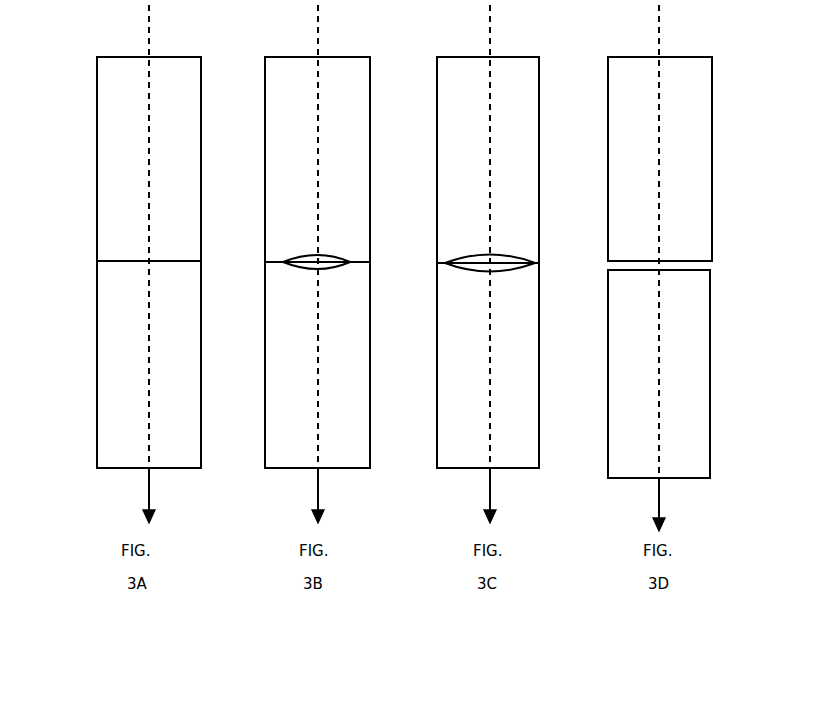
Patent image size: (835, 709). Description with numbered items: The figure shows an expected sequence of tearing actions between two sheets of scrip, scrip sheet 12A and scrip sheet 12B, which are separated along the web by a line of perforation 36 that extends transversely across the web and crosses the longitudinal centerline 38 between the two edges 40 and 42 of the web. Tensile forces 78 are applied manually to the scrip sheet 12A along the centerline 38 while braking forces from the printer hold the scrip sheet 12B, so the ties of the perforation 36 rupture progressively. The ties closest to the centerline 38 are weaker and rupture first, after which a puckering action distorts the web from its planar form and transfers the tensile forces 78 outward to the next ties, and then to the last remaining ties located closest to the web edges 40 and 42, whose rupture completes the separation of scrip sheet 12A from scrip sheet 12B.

In FIG. 3A, the scrip sheet 12A is at (97, 357).
In FIG. 3B, the scrip sheet 12A is at (265, 352).
In FIG. 3C, the scrip sheet 12A is at (437, 346).
In FIG. 3D, the scrip sheet 12A is at (608, 344).
In FIG. 3A, the scrip sheet 12B is at (97, 154).
In FIG. 3B, the scrip sheet 12B is at (265, 154).
In FIG. 3C, the scrip sheet 12B is at (437, 146).
In FIG. 3D, the scrip sheet 12B is at (608, 140).
In FIG. 3A, the line of perforation 36 is at (118, 265).
In FIG. 3B, the line of perforation 36 is at (317, 262).
In FIG. 3C, the line of perforation 36 is at (490, 263).
In FIG. 3A, the longitudinal centerline 38 is at (148, 25).
In FIG. 3B, the longitudinal centerline 38 is at (317, 27).
In FIG. 3C, the longitudinal centerline 38 is at (489, 28).
In FIG. 3D, the longitudinal centerline 38 is at (659, 42).
In FIG. 3A, the edge of the web 40 is at (97, 99).
In FIG. 3B, the edge of the web 40 is at (265, 410).
In FIG. 3C, the edge of the web 40 is at (437, 115).
In FIG. 3D, the edge of the web 40 is at (608, 107).
In FIG. 3A, the edge of the web 42 is at (201, 110).
In FIG. 3C, the edge of the web 42 is at (539, 412).
In FIG. 3D, the edge of the web 42 is at (710, 352).
In FIG. 3A, the tensile forces 78 is at (151, 497).
In FIG. 3B, the tensile forces 78 is at (320, 497).
In FIG. 3C, the tensile forces 78 is at (492, 497).
In FIG. 3D, the tensile forces 78 is at (661, 503).